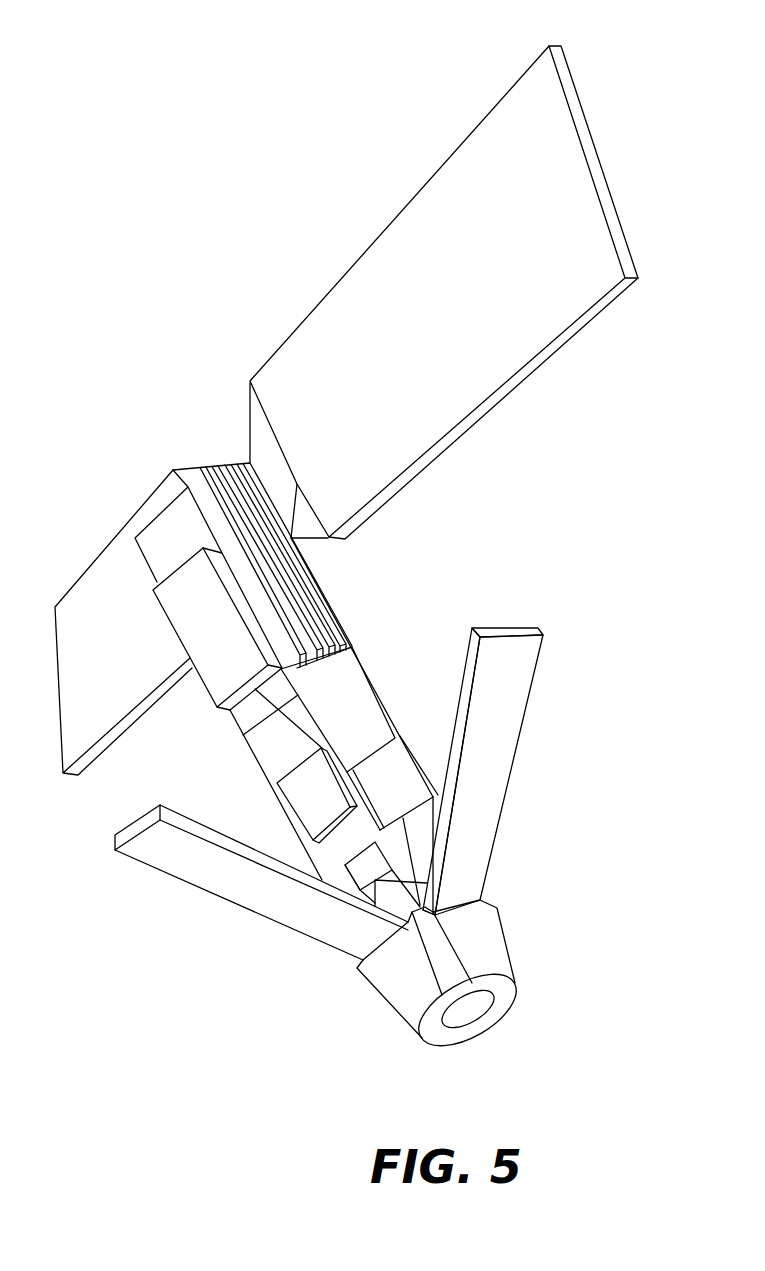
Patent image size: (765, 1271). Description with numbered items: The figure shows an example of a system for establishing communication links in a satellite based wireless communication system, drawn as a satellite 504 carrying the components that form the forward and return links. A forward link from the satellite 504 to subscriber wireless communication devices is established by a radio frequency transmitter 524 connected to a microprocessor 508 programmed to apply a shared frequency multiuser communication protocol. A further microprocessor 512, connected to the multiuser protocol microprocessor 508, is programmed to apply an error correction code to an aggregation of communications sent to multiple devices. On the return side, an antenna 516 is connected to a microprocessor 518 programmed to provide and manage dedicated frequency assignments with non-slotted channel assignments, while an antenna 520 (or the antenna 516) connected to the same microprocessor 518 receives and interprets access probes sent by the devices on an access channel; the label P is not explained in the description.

The satellite 504 is at (226, 463).
The microprocessor 508 is at (398, 773).
The microprocessor 512 is at (277, 787).
The mounting plate P is at (343, 853).
The microprocessor 518 is at (348, 882).
The antenna 516 is at (237, 885).
The antenna 520 is at (490, 802).
The radio frequency transmitter 524 is at (473, 1005).